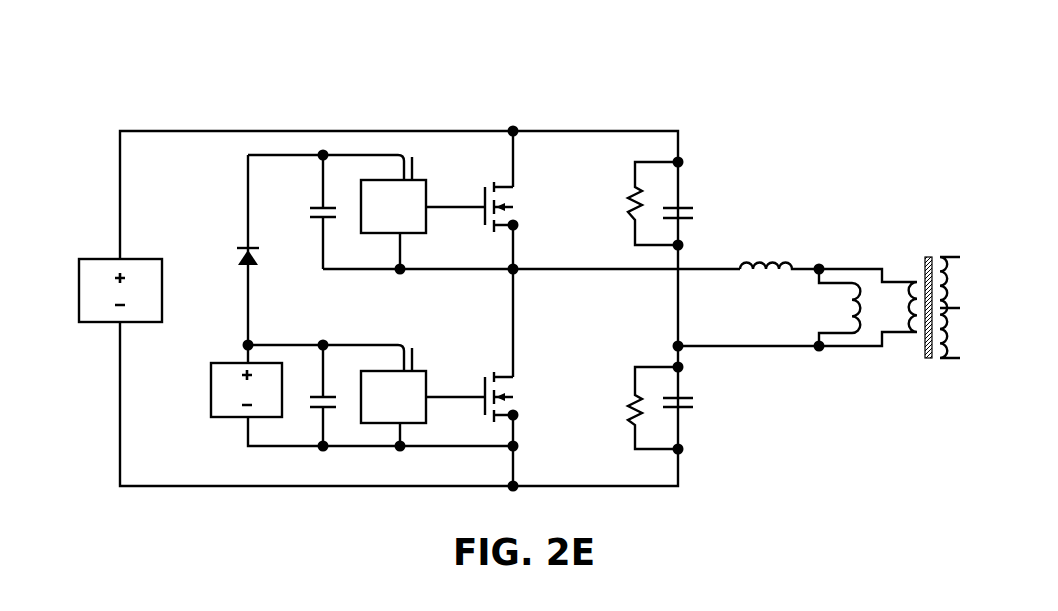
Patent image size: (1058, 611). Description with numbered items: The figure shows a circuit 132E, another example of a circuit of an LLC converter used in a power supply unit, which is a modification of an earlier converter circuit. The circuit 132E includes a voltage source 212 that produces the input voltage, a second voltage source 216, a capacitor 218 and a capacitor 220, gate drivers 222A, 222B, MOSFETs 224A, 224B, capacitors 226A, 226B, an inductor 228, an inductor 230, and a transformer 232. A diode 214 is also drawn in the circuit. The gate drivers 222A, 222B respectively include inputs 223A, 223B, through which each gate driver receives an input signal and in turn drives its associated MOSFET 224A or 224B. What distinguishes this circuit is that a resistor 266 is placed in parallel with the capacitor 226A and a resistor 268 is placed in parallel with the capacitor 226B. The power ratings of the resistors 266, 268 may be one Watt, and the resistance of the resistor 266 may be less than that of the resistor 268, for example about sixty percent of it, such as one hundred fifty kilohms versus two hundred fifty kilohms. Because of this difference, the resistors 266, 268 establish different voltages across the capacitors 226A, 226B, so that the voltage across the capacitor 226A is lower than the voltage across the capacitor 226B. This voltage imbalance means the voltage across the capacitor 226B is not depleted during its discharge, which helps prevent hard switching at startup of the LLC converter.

The circuit 132E is at (131, 91).
The voltage source 212 is at (79, 286).
The diode 214 is at (240, 258).
The voltage source 216 is at (211, 390).
The capacitor 218 is at (313, 207).
The capacitor 220 is at (314, 408).
The gate driver 222A is at (417, 221).
The gate driver 222B is at (417, 411).
The input 223A is at (412, 176).
The input 223B is at (412, 367).
The MOSFET 224A is at (485, 197).
The MOSFET 224B is at (485, 385).
The capacitor 226A is at (688, 207).
The capacitor 226B is at (688, 397).
The inductor 228 is at (791, 263).
The inductor 230 is at (851, 299).
The transformer 232 is at (927, 257).
The resistor 266 is at (629, 208).
The resistor 268 is at (628, 408).